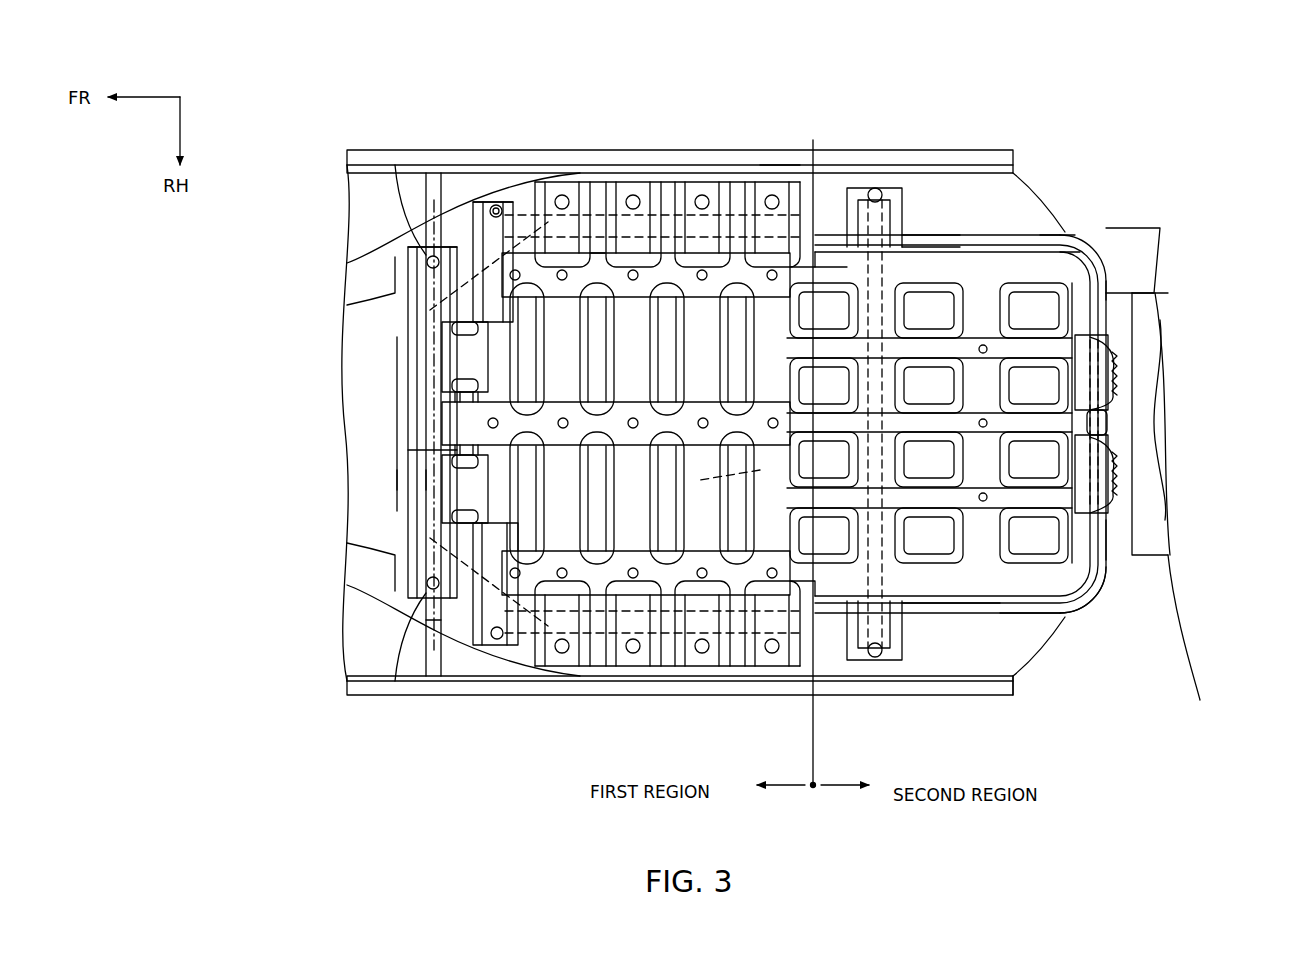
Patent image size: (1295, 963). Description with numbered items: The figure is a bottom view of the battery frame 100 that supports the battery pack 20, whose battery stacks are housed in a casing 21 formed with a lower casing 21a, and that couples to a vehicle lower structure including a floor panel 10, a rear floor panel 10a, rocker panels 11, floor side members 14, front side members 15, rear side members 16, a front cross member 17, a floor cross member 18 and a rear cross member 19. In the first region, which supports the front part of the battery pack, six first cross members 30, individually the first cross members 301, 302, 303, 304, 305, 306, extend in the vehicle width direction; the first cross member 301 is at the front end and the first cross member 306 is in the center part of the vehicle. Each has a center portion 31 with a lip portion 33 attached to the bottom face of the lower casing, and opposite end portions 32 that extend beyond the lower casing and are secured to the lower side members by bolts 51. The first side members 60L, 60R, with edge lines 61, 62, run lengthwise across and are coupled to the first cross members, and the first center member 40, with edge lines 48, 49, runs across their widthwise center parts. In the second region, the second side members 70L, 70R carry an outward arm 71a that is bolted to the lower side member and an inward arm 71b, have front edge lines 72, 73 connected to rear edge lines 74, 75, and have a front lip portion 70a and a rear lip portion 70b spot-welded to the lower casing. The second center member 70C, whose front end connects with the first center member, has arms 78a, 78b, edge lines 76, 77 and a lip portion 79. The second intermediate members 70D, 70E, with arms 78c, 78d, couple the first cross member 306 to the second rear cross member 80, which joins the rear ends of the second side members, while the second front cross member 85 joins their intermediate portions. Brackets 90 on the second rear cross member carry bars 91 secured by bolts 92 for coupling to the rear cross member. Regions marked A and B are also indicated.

The floor panel 10 is at (372, 215).
The rear floor panel 10a is at (1165, 450).
The rocker panel 11 is at (372, 170).
The floor side member 14 is at (770, 173).
The front side member 15 is at (370, 283).
The rear side member 16 is at (1106, 270).
The front cross member 17 is at (380, 640).
The floor cross member 18 is at (915, 240).
The rear cross member 19 is at (1160, 293).
The battery pack 20 is at (392, 480).
The casing 21 is at (395, 480).
The lower casing 21a is at (428, 640).
The first cross member 30 is at (375, 52).
The first cross member 301 is at (432, 248).
The first cross member 302 is at (480, 265).
The first cross member 303 is at (618, 88).
The first cross member 304 is at (645, 182).
The first cross member 305 is at (700, 182).
The first cross member 306 is at (760, 182).
The center portion 31 is at (575, 270).
The opposite end portion 32 is at (550, 275).
The lip portion 33 is at (600, 275).
The first center member 40 is at (440, 408).
The edge line 48 is at (440, 365).
The edge line 49 is at (410, 455).
The bolt 51 is at (633, 667).
The first side member 60L is at (492, 203).
The first side member 60R is at (497, 647).
The edge line 61 is at (545, 215).
The edge line 62 is at (505, 203).
The front lip portion 70a is at (830, 245).
The rear lip portion 70b is at (1080, 240).
The second center member 70C is at (1120, 345).
The second intermediate member 70D is at (1112, 228).
The second intermediate member 70E is at (1062, 614).
The second side member 70L is at (995, 280).
The second side member 70R is at (960, 600).
The outward arm 71a is at (878, 300).
The inward arm 71b is at (935, 300).
The edge line 72 is at (862, 190).
The edge line 73 is at (800, 245).
The edge line 74 is at (1045, 235).
The edge line 75 is at (1065, 235).
The edge line 76 is at (1112, 385).
The edge line 77 is at (1118, 400).
The arm 78a is at (905, 648).
The arm 78b is at (872, 660).
The arm 78c is at (940, 250).
The arm 78d is at (965, 252).
The lip portion 79 is at (1118, 480).
The second rear cross member 80 is at (1163, 230).
The second front cross member 85 is at (1025, 655).
The bracket 90 is at (1125, 590).
The bar 91 is at (1117, 520).
The bolt 92 is at (1118, 510).
The battery frame 100 is at (1095, 250).
The section line A is at (905, 215).
The section line B is at (760, 680).